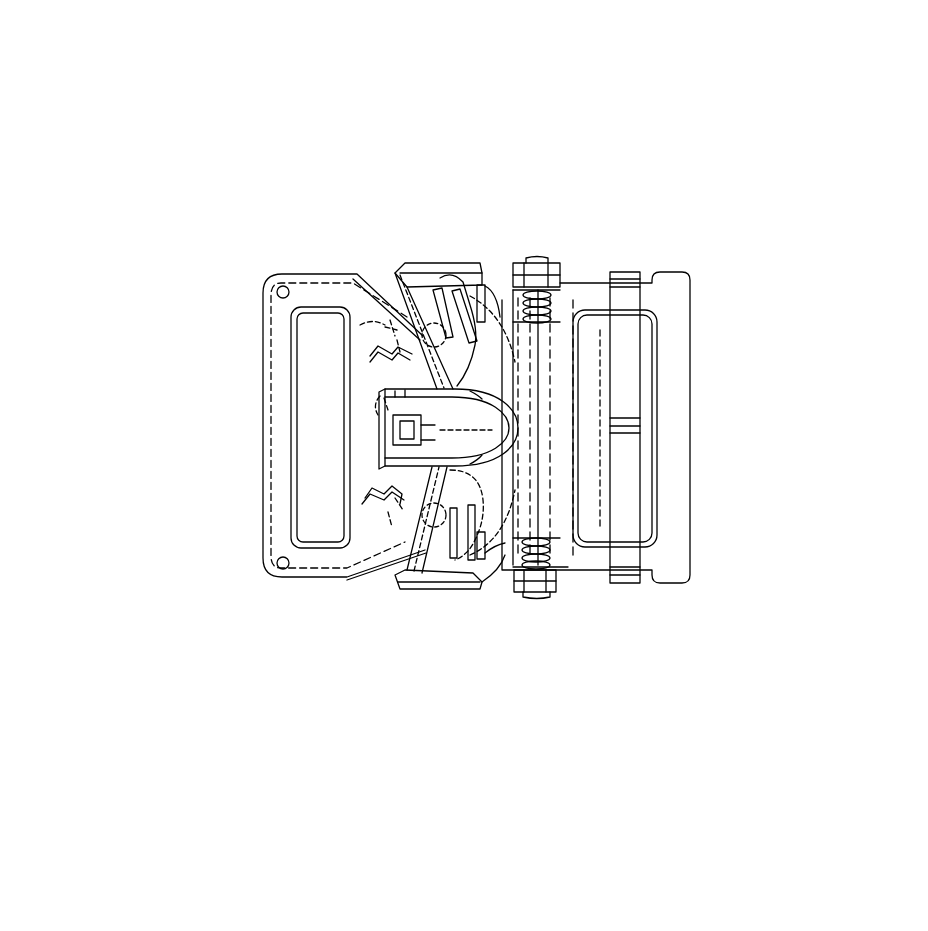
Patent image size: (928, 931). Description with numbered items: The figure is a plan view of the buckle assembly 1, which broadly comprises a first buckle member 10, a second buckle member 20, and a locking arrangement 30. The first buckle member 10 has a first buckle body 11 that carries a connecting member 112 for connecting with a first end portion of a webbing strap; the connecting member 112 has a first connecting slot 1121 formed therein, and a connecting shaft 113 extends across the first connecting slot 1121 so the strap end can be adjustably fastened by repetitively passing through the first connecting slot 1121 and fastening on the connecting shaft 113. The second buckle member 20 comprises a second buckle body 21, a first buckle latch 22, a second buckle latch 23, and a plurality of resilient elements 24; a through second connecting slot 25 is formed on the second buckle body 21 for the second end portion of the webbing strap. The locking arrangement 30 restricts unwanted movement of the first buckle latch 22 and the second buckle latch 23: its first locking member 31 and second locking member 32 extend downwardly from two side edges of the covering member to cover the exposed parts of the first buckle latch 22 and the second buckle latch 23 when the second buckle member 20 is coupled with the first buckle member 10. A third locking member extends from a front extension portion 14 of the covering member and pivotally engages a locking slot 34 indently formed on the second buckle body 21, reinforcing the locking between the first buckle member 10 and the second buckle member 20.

The buckle assembly 1 is at (237, 172).
The first buckle member 10 is at (740, 262).
The first buckle body 11 is at (670, 563).
The connecting member 112 is at (682, 452).
The first connecting slot 1121 is at (593, 377).
The connecting shaft 113 is at (633, 490).
The front extension portion 14 is at (463, 410).
The second buckle member 20 is at (358, 240).
The second buckle body 21 is at (338, 560).
The first buckle latch 22 is at (413, 357).
The second buckle latch 23 is at (412, 517).
The resilient elements 24 is at (423, 336).
The second connecting slot 25 is at (318, 486).
The locking arrangement 30 is at (470, 215).
The first locking member 31 is at (483, 282).
The second locking member 32 is at (481, 558).
The locking slot 34 is at (393, 433).